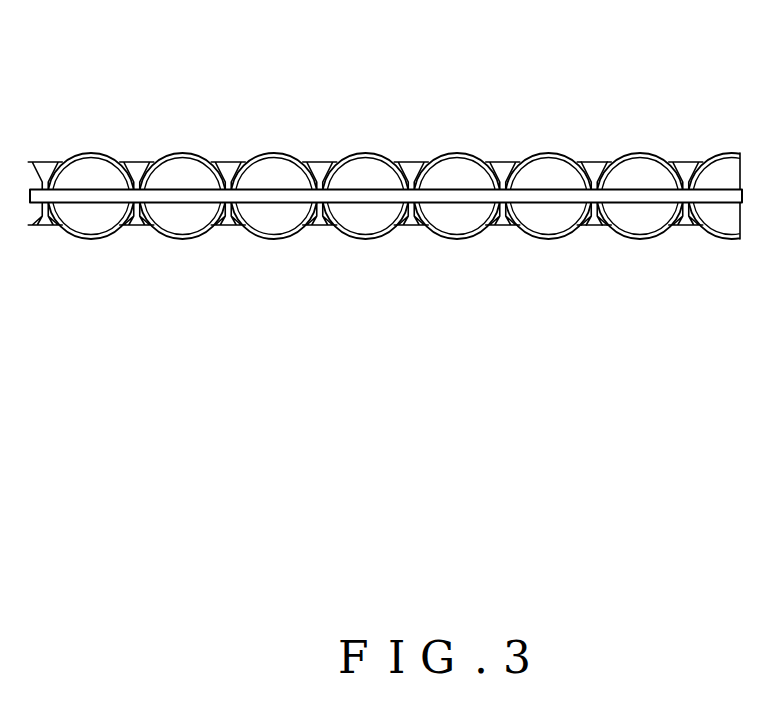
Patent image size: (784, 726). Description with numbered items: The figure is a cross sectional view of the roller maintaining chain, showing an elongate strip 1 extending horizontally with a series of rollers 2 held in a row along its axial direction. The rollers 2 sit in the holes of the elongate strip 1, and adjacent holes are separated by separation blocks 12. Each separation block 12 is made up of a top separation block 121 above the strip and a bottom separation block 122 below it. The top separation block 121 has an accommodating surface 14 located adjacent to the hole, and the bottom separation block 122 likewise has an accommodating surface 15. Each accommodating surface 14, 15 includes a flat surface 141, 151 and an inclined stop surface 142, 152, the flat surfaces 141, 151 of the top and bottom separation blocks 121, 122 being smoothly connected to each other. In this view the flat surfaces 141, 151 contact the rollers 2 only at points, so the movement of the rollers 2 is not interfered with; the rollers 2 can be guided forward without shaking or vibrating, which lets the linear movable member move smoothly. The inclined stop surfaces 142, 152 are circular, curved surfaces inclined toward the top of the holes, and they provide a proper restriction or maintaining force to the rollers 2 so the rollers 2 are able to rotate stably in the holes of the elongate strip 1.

The elongate strip 1 is at (440, 192).
The rollers 2 is at (370, 172).
The separation block 12 is at (587, 199).
The top separation block 121 is at (596, 163).
The bottom separation block 122 is at (593, 221).
The accommodating surface 14 is at (552, 97).
The flat surface 141 is at (583, 184).
The inclined stop surface 142 is at (587, 181).
The accommodating surface 15 is at (550, 297).
The flat surface 151 is at (582, 205).
The inclined stop surface 152 is at (587, 218).